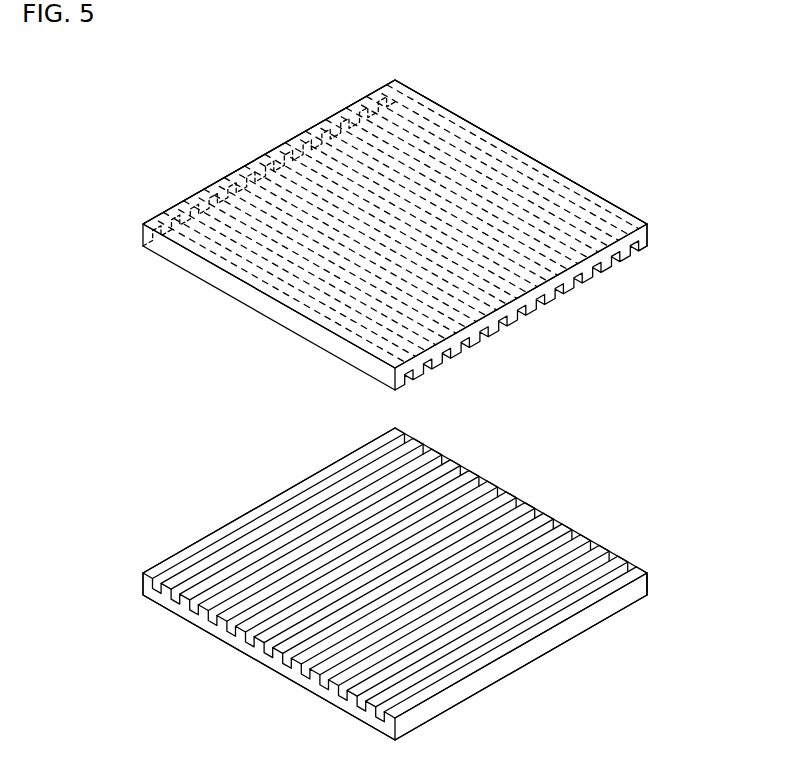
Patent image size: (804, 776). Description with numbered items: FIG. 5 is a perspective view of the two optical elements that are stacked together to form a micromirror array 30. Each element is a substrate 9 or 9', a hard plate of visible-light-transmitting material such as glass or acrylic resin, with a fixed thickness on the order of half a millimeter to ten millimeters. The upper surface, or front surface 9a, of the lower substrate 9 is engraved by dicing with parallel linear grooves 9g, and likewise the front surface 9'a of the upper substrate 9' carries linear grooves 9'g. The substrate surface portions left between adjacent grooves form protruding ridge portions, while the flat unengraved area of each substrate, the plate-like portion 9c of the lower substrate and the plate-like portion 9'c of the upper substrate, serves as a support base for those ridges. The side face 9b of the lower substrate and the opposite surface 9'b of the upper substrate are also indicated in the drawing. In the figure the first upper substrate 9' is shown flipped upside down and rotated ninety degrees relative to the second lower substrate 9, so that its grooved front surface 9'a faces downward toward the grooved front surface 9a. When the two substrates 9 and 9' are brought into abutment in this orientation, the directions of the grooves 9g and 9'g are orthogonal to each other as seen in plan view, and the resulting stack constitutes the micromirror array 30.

The micromirror array 30 is at (473, 417).
The substrate 9 is at (396, 584).
The front surface 9a is at (237, 525).
The side surface of plate 9 9b is at (523, 652).
The plate-like portion 9c is at (195, 618).
The linear grooves 9g is at (252, 642).
The substrate 9' is at (396, 235).
The front surface 9'a is at (385, 223).
The upper surface of plate 9' 9'b is at (395, 223).
The plate-like portion 9'c is at (653, 271).
The linear grooves 9'g is at (530, 315).